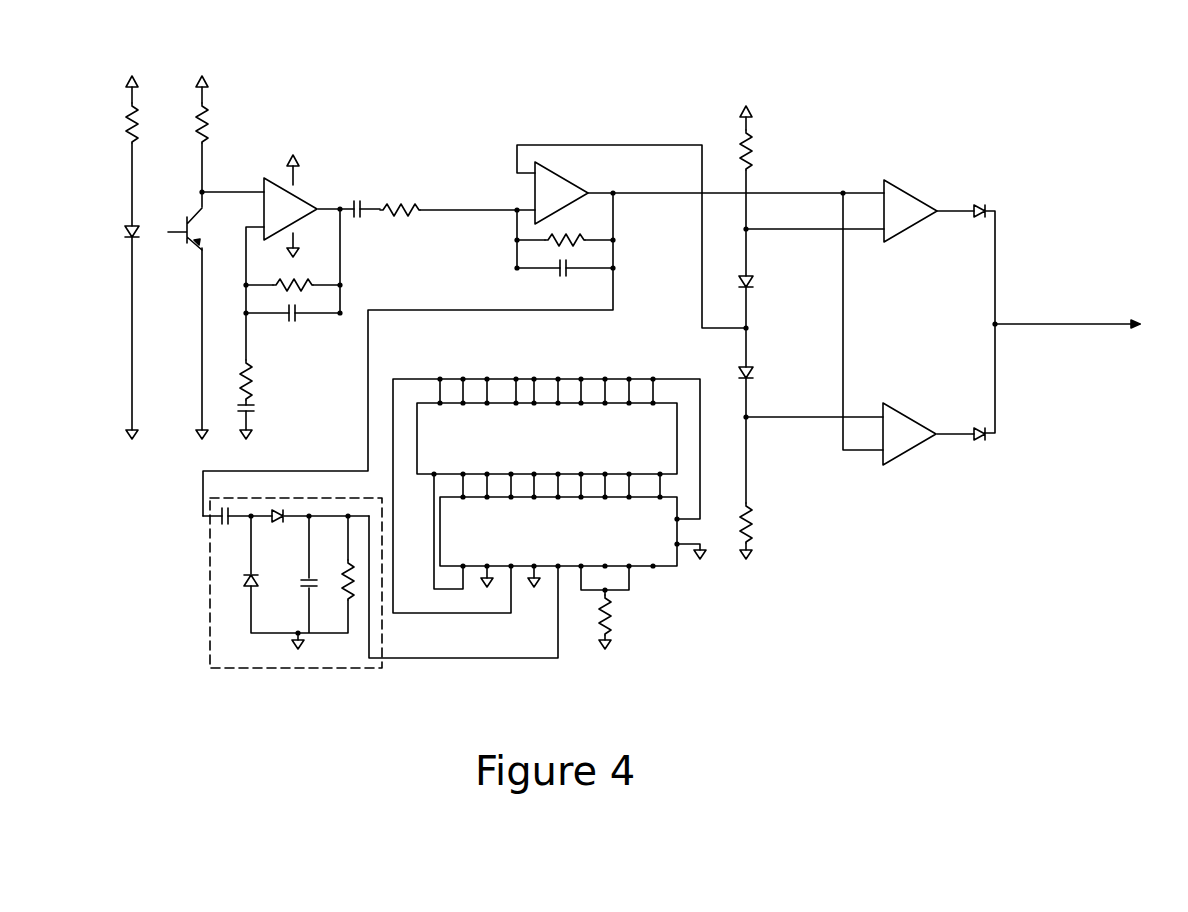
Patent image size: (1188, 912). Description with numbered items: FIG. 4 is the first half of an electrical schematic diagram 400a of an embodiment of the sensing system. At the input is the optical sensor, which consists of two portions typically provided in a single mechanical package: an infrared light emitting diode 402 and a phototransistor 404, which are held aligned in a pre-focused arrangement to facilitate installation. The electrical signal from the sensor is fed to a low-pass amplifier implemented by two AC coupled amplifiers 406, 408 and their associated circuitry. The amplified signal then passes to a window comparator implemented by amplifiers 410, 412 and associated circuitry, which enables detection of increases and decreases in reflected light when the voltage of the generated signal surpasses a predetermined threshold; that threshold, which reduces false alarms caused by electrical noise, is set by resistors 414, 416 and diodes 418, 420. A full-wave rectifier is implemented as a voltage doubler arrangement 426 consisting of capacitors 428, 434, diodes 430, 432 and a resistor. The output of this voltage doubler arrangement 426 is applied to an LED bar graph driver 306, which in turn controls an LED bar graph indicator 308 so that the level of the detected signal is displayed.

The electrical schematic diagram 400a is at (896, 86).
The infrared light emitting diode (IRLED) 402 is at (127, 233).
The phototransistor 404 is at (185, 231).
The AC coupled amplifier 406 is at (308, 201).
The AC coupled amplifier 408 is at (553, 173).
The amplifier 410 is at (908, 193).
The amplifier 412 is at (908, 416).
The resistor 414 is at (748, 166).
The resistor 416 is at (752, 512).
The diode 418 is at (753, 281).
The diode 420 is at (753, 371).
The voltage doubler arrangement 426 is at (265, 668).
The capacitor 428 is at (231, 507).
The diode 430 is at (276, 507).
The diode 432 is at (241, 585).
The capacitor 434 is at (320, 636).
The LED bar graph driver 306 is at (668, 561).
The LED bar graph indicator 308 is at (667, 408).